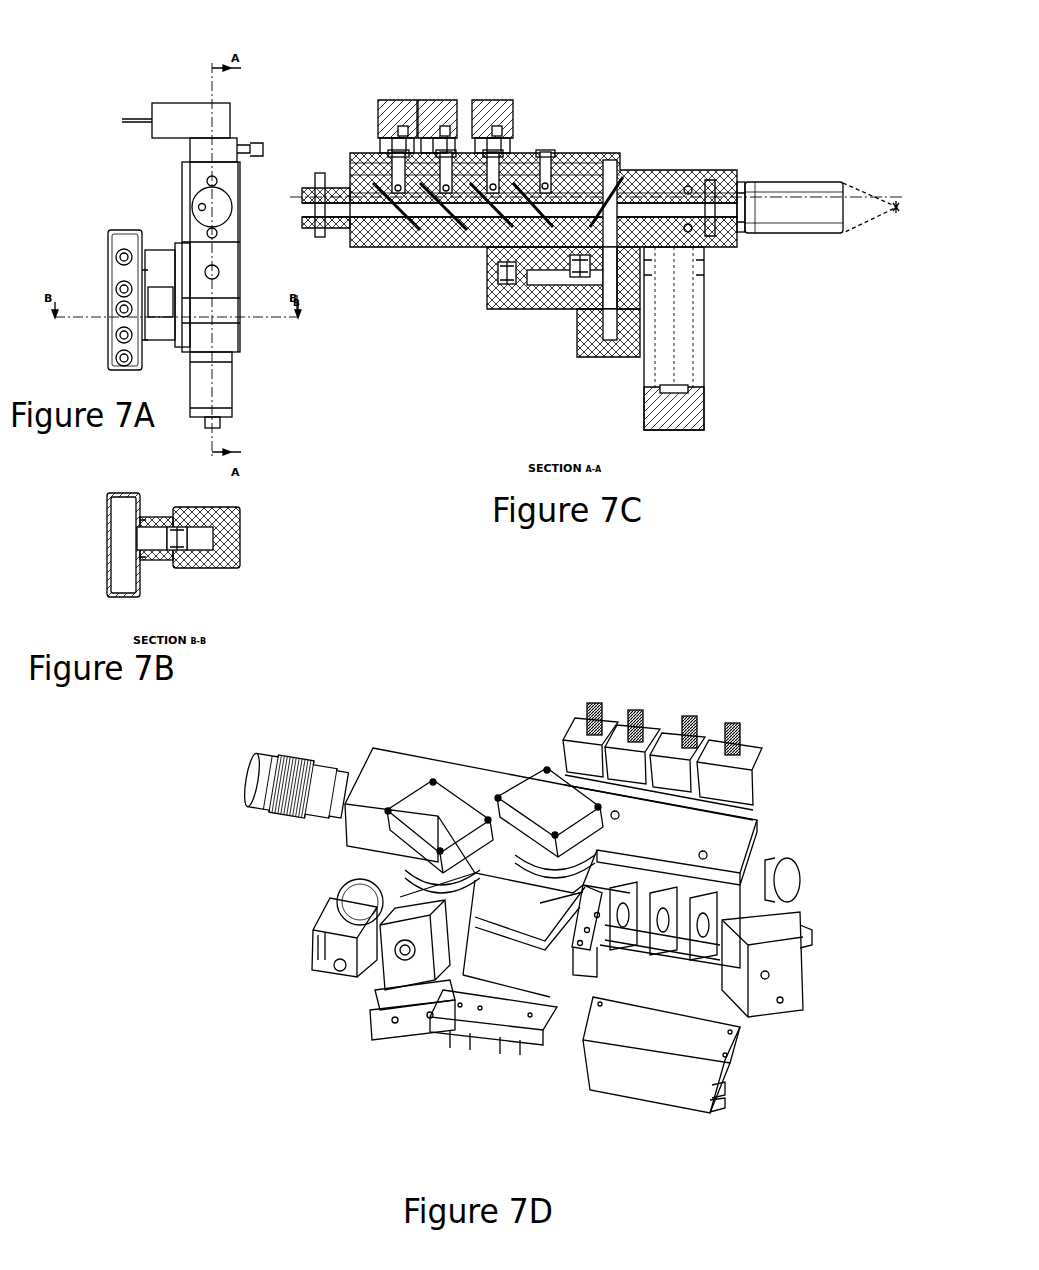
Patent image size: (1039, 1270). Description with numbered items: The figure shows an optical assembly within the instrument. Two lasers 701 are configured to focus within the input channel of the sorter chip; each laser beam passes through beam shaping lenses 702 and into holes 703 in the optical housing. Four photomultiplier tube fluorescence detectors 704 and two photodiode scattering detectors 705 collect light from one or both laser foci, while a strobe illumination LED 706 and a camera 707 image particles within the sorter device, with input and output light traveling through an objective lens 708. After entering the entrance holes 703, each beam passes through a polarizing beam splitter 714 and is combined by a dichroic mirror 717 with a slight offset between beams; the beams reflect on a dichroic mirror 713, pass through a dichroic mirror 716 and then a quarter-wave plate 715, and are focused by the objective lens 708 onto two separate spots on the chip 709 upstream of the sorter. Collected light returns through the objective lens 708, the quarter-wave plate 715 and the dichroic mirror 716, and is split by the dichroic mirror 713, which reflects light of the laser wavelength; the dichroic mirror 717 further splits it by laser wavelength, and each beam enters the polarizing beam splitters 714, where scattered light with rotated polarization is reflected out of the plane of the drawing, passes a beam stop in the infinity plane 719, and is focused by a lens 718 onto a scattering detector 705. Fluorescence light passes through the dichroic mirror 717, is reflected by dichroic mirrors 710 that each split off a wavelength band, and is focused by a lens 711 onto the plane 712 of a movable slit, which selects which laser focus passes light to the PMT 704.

In FIG. 7D, the lasers 701 is at (517, 967).
In FIG. 7D, the beam shaping lenses 702 is at (648, 905).
In FIG. 7C, the holes 703 is at (613, 355).
In FIG. 7D, the holes 703 is at (590, 887).
In FIG. 7C, the photomultiplier tube fluorescence detectors 704 is at (513, 100).
In FIG. 7D, the photomultiplier tube fluorescence detectors 704 is at (713, 760).
In FIG. 7B, the photodiode scattering detectors 705 is at (133, 537).
In FIG. 7D, the photodiode scattering detectors 705 is at (545, 768).
In FIG. 7C, the strobe illumination LED 706 is at (330, 193).
In FIG. 7D, the strobe illumination LED 706 is at (792, 860).
In FIG. 7C, the camera 707 is at (682, 430).
In FIG. 7D, the camera 707 is at (320, 963).
In FIG. 7C, the objective lens 708 is at (808, 232).
In FIG. 7D, the objective lens 708 is at (243, 787).
In FIG. 7C, the chip 709 is at (895, 205).
In FIG. 7C, the dichroic mirrors 710 is at (553, 229).
In FIG. 7C, the lens 711 is at (547, 187).
In FIG. 7C, the plane of a movable slit 712 is at (545, 152).
In FIG. 7C, the dichroic mirror 713 is at (570, 237).
In FIG. 7B, the polarizing beam splitter 714 is at (213, 540).
In FIG. 7C, the polarizing beam splitter 714 is at (588, 333).
In FIG. 7C, the quarter-wave plate 715 is at (698, 235).
In FIG. 7C, the dichroic mirror 716 is at (665, 203).
In FIG. 7C, the dichroic mirror 717 is at (614, 343).
In FIG. 7B, the lens 718 is at (173, 547).
In FIG. 7B, the infinity plane 719 is at (187, 530).